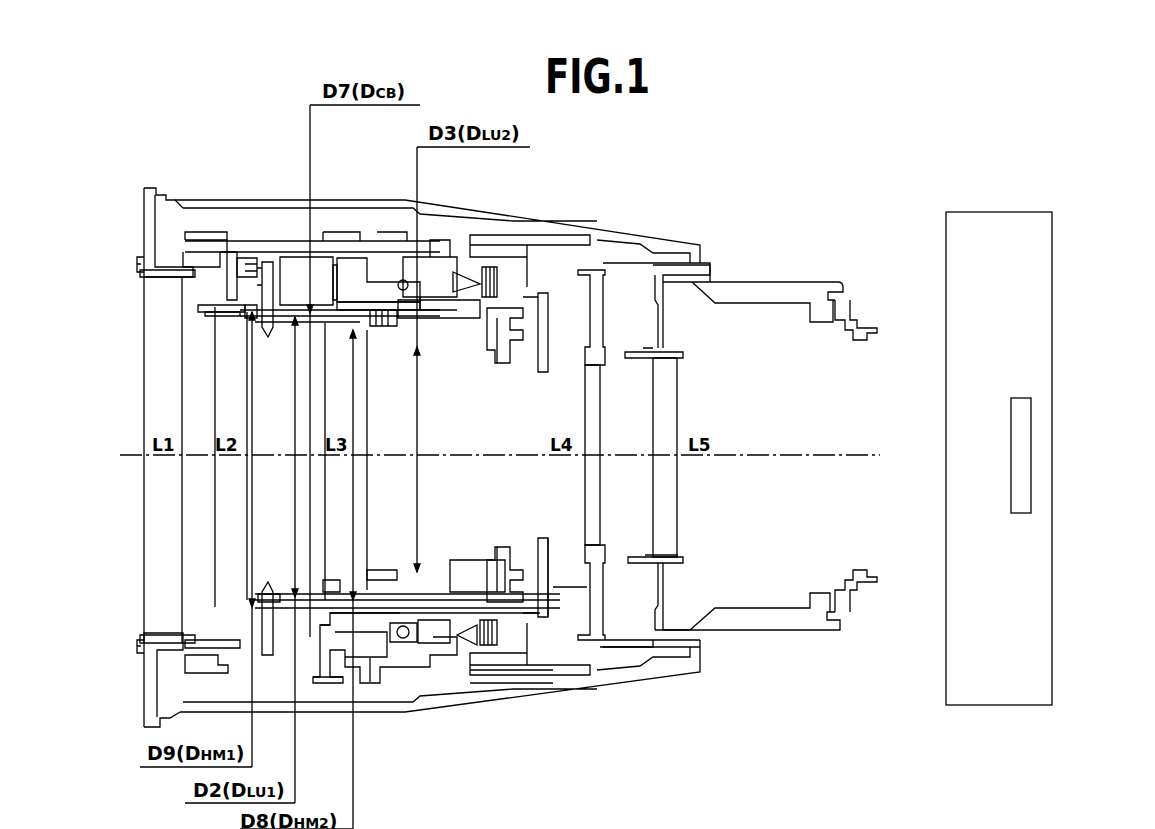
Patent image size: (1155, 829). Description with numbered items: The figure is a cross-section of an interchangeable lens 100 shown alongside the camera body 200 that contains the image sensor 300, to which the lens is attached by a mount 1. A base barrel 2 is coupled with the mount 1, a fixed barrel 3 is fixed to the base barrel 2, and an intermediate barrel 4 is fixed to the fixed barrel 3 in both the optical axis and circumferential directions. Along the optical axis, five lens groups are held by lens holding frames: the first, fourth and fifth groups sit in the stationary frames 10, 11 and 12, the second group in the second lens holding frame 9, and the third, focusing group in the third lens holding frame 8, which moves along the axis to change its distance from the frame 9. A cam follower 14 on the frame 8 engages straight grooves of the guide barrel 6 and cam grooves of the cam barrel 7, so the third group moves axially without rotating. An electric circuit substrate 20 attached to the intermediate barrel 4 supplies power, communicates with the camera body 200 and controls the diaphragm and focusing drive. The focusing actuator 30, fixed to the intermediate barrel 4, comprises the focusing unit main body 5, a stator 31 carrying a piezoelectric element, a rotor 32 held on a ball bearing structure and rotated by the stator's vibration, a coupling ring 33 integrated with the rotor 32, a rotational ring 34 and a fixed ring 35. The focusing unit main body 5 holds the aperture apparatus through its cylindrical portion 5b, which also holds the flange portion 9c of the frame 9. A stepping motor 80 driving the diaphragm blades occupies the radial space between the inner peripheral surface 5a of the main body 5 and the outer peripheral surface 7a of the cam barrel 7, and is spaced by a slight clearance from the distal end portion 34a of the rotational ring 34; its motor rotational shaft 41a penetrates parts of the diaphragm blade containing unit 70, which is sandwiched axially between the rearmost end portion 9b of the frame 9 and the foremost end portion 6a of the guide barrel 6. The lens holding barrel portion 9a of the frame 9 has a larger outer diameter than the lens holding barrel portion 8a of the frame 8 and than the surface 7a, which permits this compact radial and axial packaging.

The mount 1 is at (851, 322).
The base barrel 2 is at (787, 290).
The fixed barrel 3 is at (627, 250).
The intermediate barrel 4 is at (530, 257).
The focusing unit main body 5 is at (373, 287).
The inner peripheral surface 5a is at (215, 260).
The cylindrical portion 5b is at (223, 240).
The guide barrel 6 is at (453, 597).
The foremost end portion 6a is at (266, 600).
The cam barrel 7 is at (457, 287).
The outer peripheral surface 7a is at (357, 305).
The third lens holding frame 8 is at (365, 330).
The lens holding barrel portion 8a is at (360, 580).
The second lens holding frame 9 is at (240, 307).
The lens holding barrel portion 9a is at (228, 312).
The rearmost end portion 9b is at (250, 318).
The flange portion 9c is at (237, 270).
The lens holding frame 10 is at (148, 214).
The lens holding frame 11 is at (587, 310).
The lens holding frame 12 is at (660, 345).
The cam follower 14 is at (398, 318).
The electric circuit substrate 20 is at (548, 587).
The focusing actuator 30 is at (510, 722).
The stator 31 is at (477, 633).
The rotor 32 is at (448, 647).
The coupling ring 33 is at (417, 655).
The rotational ring 34 is at (372, 682).
The distal end portion 34a is at (325, 262).
The fixed ring 35 is at (368, 700).
The motor rotational shaft 41a is at (227, 290).
The diaphragm blade containing unit 70 is at (285, 343).
The stepping motor 80 is at (282, 262).
The interchangeable lens 100 is at (800, 154).
The camera body 200 is at (1001, 212).
The image sensor 300 is at (1022, 460).